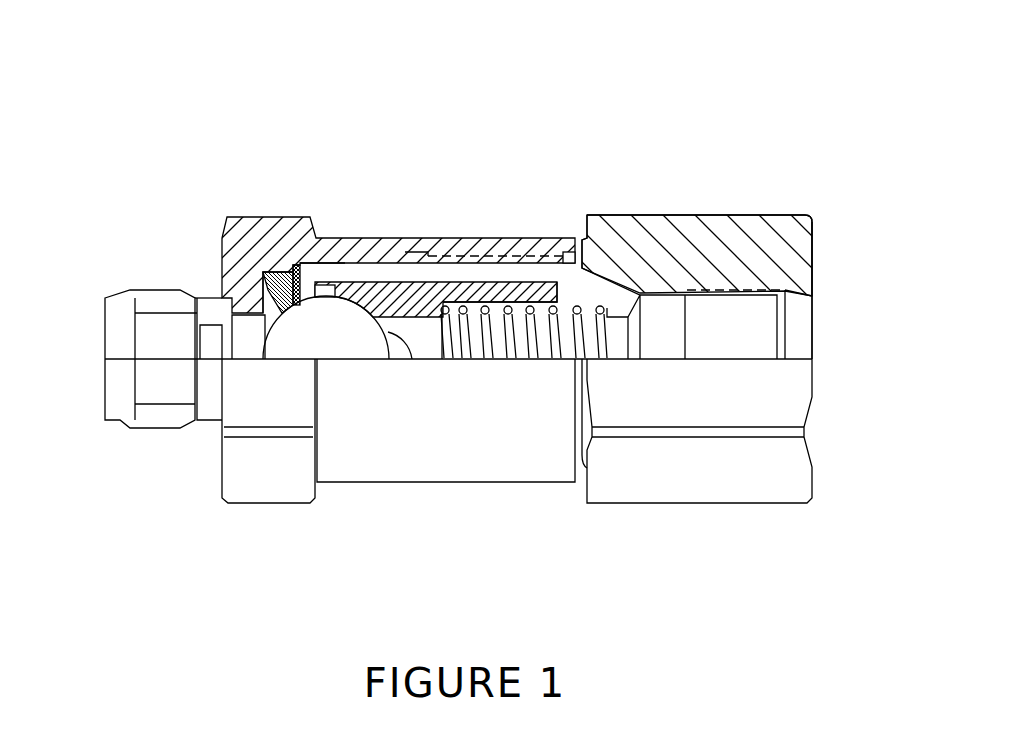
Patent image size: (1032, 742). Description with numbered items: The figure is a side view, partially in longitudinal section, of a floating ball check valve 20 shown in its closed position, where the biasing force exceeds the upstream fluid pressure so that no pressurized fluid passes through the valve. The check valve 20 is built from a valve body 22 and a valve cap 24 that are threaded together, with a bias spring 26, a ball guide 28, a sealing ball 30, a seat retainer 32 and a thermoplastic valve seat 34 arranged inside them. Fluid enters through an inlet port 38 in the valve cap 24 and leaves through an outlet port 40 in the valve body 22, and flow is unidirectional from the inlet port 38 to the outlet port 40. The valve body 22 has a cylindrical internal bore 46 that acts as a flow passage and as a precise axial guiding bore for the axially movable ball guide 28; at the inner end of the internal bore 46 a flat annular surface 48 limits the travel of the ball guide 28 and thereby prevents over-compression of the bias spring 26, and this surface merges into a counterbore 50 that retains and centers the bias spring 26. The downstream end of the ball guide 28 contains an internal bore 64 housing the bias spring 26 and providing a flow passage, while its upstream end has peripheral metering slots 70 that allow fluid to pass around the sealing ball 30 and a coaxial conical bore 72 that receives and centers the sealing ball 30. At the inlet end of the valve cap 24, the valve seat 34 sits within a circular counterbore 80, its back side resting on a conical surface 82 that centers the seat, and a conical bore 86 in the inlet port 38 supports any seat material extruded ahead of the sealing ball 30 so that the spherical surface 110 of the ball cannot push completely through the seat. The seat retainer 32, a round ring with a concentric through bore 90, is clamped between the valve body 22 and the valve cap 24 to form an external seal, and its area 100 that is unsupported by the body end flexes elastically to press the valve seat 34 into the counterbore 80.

The floating ball check valve 20 is at (507, 92).
The valve body 22 is at (743, 215).
The valve cap 24 is at (233, 213).
The bias spring 26 is at (508, 283).
The ball guide 28 is at (414, 250).
The sealing ball 30 is at (379, 290).
The seat retainer 32 is at (294, 282).
The valve seat 34 is at (287, 278).
The inlet port 38 is at (105, 338).
The outlet port 40 is at (812, 318).
The internal bore 46 is at (582, 285).
The flat annular surface 48 is at (616, 300).
The counterbore 50 is at (636, 298).
The internal bore 64 is at (508, 312).
The metering slots 70 is at (343, 313).
The conical bore 72 is at (438, 312).
The circular counterbore 80 is at (268, 273).
The conical surface 82 is at (200, 323).
The conical bore 86 is at (270, 295).
The through bore 90 is at (403, 347).
The unsupported area 100 is at (326, 288).
The spherical surface 110 is at (285, 295).